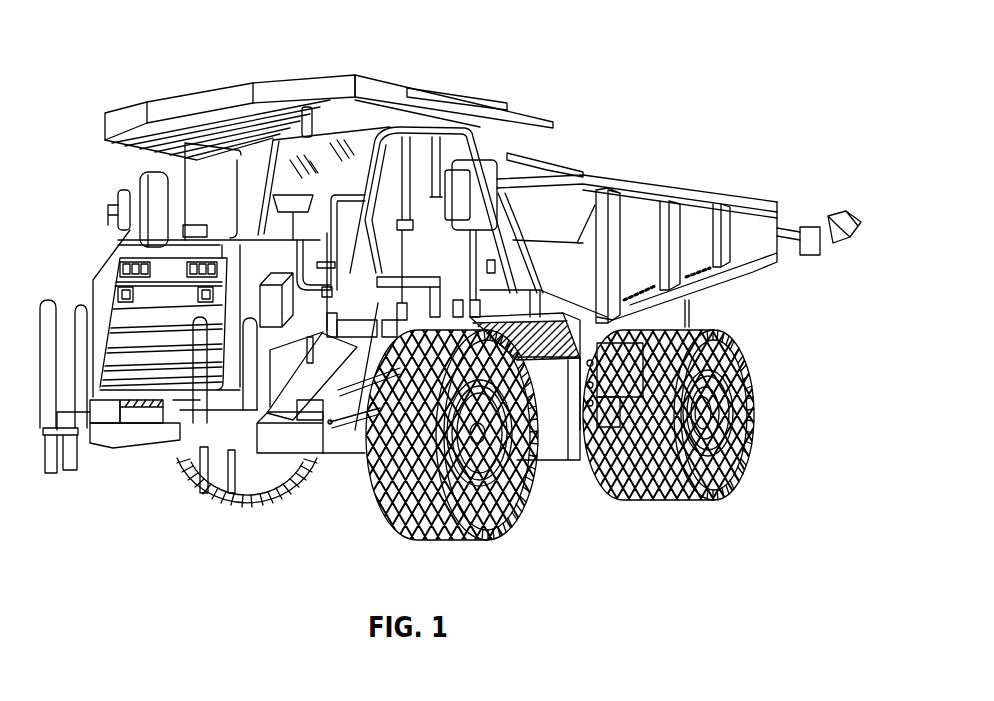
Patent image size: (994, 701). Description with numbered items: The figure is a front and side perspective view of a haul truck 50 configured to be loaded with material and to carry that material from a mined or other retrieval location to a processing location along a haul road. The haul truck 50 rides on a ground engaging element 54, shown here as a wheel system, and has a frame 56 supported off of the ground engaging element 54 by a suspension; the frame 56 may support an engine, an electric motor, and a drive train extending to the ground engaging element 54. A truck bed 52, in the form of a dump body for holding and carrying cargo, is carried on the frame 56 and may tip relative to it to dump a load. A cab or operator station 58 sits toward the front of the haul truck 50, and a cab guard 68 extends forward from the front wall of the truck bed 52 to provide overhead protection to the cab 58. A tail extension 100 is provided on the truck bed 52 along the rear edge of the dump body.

The haul truck 50 is at (605, 55).
The truck bed 52 is at (680, 187).
The ground engaging element 54 is at (500, 545).
The frame 56 is at (568, 460).
The cab 58 is at (343, 413).
The cab guard 68 is at (313, 93).
The tail extension 100 is at (811, 205).